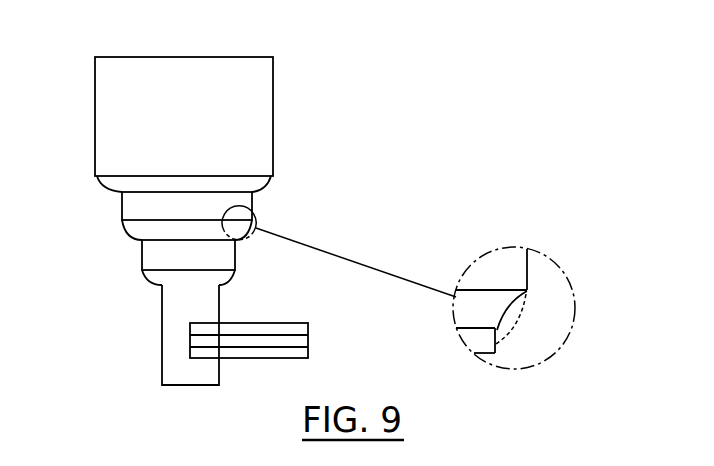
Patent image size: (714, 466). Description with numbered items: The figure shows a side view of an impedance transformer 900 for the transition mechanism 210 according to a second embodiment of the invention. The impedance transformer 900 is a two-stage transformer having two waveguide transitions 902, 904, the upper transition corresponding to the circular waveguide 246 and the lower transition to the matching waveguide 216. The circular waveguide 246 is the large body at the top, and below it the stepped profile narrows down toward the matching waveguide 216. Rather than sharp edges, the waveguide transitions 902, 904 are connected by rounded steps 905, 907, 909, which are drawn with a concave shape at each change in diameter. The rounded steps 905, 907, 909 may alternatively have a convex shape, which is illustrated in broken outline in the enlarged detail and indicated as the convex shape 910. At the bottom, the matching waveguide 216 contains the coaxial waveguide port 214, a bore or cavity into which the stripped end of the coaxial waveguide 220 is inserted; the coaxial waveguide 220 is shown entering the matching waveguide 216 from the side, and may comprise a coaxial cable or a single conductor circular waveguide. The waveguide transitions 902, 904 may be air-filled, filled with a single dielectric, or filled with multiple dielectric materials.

The transition mechanism 210 is at (258, 41).
The circular waveguide 246 is at (274, 116).
The rounded step 909 is at (103, 192).
The waveguide transition 904 is at (254, 200).
The rounded step 907 is at (130, 232).
The waveguide transition 902 is at (238, 259).
The rounded step 905 is at (158, 285).
The matching waveguide 216 is at (160, 350).
The coaxial waveguide 220 is at (293, 322).
The coaxial waveguide port 214 is at (203, 360).
The impedance transformer 900 is at (312, 213).
The convex shape 910 is at (518, 316).